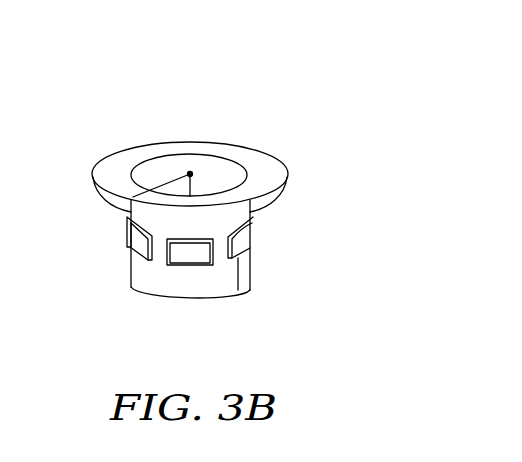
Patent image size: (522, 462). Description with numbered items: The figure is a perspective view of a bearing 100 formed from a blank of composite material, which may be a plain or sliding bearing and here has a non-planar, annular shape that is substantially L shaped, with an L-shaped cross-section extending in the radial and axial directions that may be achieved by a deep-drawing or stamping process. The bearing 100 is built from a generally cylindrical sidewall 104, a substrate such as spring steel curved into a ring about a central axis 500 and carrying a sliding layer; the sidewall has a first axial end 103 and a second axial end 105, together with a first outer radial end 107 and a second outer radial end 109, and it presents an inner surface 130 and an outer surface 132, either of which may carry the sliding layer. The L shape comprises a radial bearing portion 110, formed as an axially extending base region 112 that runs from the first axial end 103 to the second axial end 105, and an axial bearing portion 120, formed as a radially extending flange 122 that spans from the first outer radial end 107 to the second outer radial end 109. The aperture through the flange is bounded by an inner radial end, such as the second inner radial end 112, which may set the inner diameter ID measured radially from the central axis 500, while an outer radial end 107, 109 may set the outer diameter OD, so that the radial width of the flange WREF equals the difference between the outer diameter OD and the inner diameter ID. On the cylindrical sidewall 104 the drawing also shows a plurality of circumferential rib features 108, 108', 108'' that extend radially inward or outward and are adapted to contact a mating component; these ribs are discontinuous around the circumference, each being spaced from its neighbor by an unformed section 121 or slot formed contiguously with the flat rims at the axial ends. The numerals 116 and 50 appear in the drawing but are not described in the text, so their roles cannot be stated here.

The bearing 100 is at (325, 119).
The first axial end 103 is at (250, 288).
The generally cylindrical sidewall 104 is at (243, 147).
The second axial end 105 is at (110, 163).
The first outer radial end 107 is at (93, 175).
The circumferential rib feature 108 is at (101, 254).
The circumferential rib feature 108' is at (202, 295).
The circumferential rib feature 108'' is at (276, 300).
The second outer radial end 109 is at (288, 177).
The radial bearing portion 110 is at (251, 253).
The second inner radial end 112 is at (252, 181).
The flange top surface 116 is at (125, 178).
The axial bearing portion 120 is at (285, 172).
The unformed section 121 is at (160, 257).
The radially extending flange 122 is at (107, 168).
The inner surface 130 is at (191, 174).
The outer surface 132 is at (130, 280).
The passage opening 50 is at (238, 173).
The central axis 500 is at (191, 172).
The inner diameter ID is at (194, 193).
The outer diameter OD is at (97, 186).
The radial width of the radially extending flange WREF is at (154, 146).